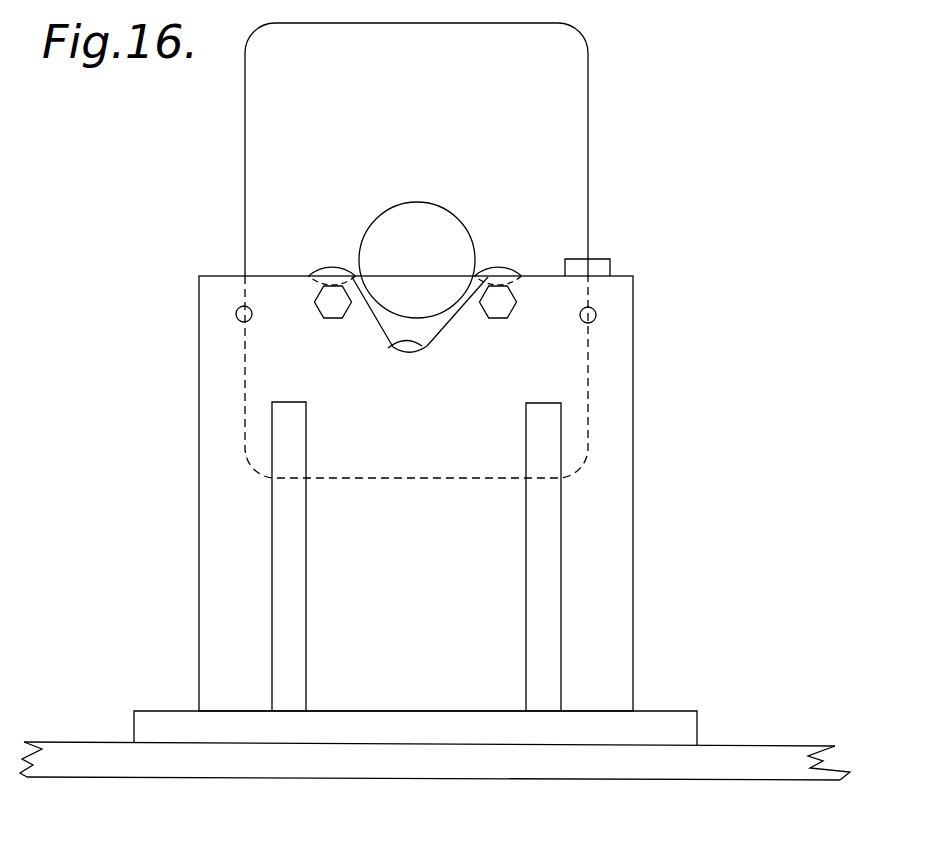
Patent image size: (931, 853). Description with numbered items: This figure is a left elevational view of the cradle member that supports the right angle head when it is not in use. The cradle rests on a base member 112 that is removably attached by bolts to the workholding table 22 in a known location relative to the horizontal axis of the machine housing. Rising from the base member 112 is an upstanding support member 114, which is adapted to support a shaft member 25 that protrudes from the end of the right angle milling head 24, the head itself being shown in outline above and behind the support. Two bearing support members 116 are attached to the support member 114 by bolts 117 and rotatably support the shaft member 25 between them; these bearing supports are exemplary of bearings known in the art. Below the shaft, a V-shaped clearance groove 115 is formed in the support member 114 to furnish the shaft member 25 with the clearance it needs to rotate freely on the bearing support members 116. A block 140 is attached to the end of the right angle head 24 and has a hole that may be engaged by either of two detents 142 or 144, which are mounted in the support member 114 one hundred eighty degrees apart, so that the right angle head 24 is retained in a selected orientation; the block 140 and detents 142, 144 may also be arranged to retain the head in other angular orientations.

The workholding table 22 is at (621, 767).
The right angle milling head 24 is at (427, 137).
The shaft member 25 is at (435, 255).
The base member 112 is at (485, 722).
The support member 114 is at (421, 588).
The clearance groove 115 is at (400, 344).
The bearing support members 116 is at (334, 268).
The bolts 117 is at (333, 303).
The block 140 is at (603, 265).
The detent 142 is at (596, 317).
The detent 144 is at (236, 312).